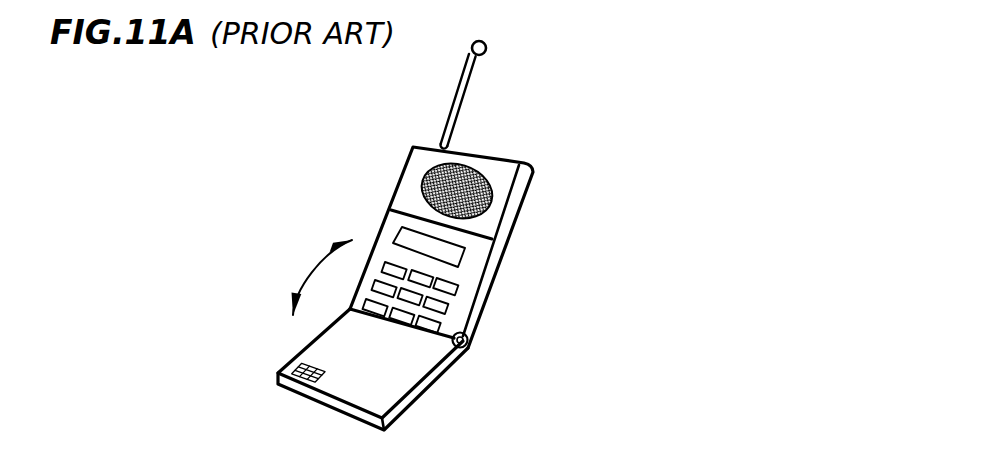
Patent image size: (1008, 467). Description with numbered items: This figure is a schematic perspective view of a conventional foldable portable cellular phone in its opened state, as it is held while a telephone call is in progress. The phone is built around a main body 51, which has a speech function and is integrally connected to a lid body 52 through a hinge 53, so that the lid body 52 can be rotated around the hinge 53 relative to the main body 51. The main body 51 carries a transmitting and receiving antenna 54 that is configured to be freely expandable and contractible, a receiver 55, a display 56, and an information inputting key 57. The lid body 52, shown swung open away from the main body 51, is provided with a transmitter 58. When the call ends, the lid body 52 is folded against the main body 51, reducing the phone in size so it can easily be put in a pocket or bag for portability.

The main body 51 is at (407, 194).
The lid body 52 is at (368, 402).
The hinge 53 is at (467, 343).
The transmitting and receiving antenna 54 is at (472, 81).
The receiver 55 is at (481, 176).
The display 56 is at (457, 260).
The information inputting key 57 is at (442, 306).
The transmitter 58 is at (297, 370).